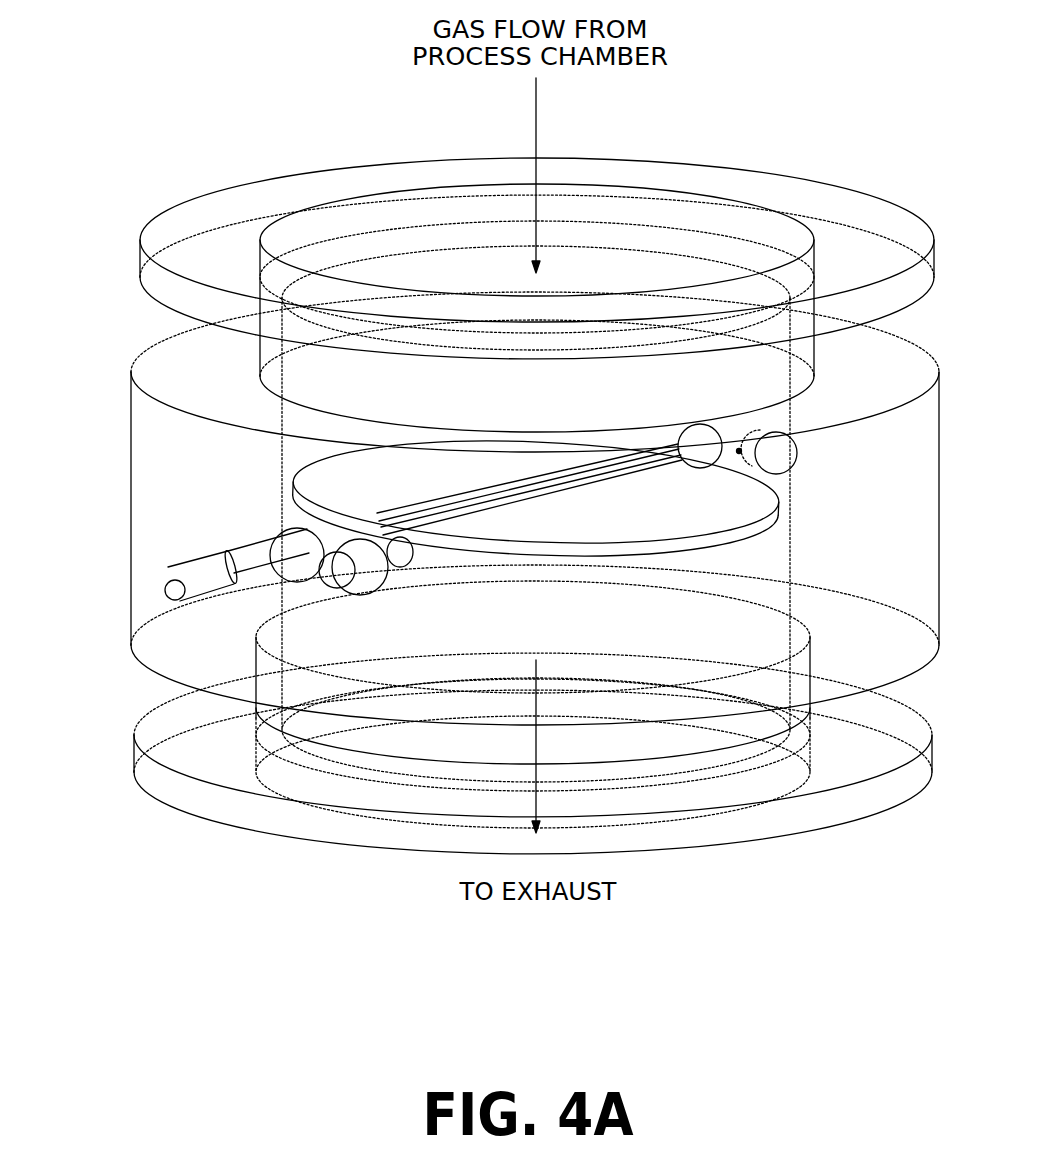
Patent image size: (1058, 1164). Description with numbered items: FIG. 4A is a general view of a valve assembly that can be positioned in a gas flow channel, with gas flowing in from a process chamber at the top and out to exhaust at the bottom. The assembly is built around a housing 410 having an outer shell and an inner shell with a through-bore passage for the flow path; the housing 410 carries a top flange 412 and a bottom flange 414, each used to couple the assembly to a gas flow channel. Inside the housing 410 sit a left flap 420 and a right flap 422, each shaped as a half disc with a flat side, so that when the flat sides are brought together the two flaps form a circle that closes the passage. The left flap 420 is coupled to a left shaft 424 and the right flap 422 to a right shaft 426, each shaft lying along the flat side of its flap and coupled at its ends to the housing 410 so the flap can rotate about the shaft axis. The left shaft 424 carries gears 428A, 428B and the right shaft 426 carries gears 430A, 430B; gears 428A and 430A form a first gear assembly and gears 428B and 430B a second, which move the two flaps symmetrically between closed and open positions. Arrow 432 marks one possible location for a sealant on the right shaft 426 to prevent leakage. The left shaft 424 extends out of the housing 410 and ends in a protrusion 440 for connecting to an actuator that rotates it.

The housing 410 is at (918, 373).
The top flange 412 is at (873, 243).
The bottom flange 414 is at (893, 760).
The left flap 420 is at (458, 468).
The right flap 422 is at (784, 517).
The left shaft 424 is at (240, 572).
The right shaft 426 is at (361, 582).
The gear 428A is at (284, 531).
The gear 428B is at (696, 424).
The gear 430A is at (367, 538).
The gear 430B is at (787, 469).
The arrow 432 is at (738, 452).
The protrusion 440 is at (170, 590).